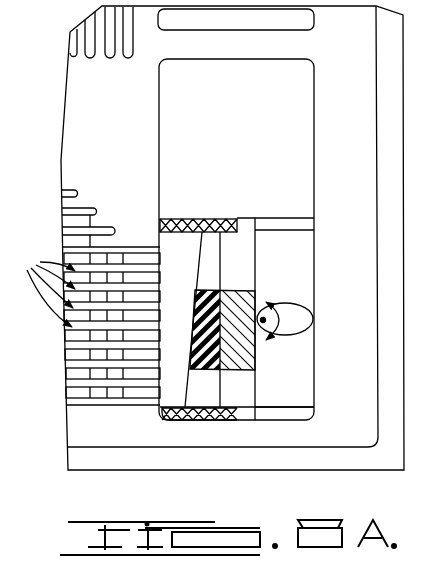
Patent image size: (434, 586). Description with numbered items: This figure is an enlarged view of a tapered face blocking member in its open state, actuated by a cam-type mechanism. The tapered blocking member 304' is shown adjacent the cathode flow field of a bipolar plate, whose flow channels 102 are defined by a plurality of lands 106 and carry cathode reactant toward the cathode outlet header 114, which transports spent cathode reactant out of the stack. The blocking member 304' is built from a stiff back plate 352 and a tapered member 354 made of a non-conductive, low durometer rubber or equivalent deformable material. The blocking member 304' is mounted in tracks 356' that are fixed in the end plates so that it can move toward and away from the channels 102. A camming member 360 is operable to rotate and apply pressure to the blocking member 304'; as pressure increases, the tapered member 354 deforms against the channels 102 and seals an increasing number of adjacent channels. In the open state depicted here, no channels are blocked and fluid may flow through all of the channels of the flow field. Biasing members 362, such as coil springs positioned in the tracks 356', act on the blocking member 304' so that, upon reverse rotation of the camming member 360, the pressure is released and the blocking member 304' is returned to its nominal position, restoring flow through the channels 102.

The flow channels 102 is at (44, 280).
The lands 106 is at (133, 353).
The cathode outlet header 114 is at (271, 383).
The tapered blocking member 304' is at (272, 168).
The back plate 352 is at (243, 268).
The tapered member 354 is at (210, 260).
The tracks 356' is at (312, 289).
The camming member 360 is at (300, 312).
The biasing members 362 is at (173, 221).